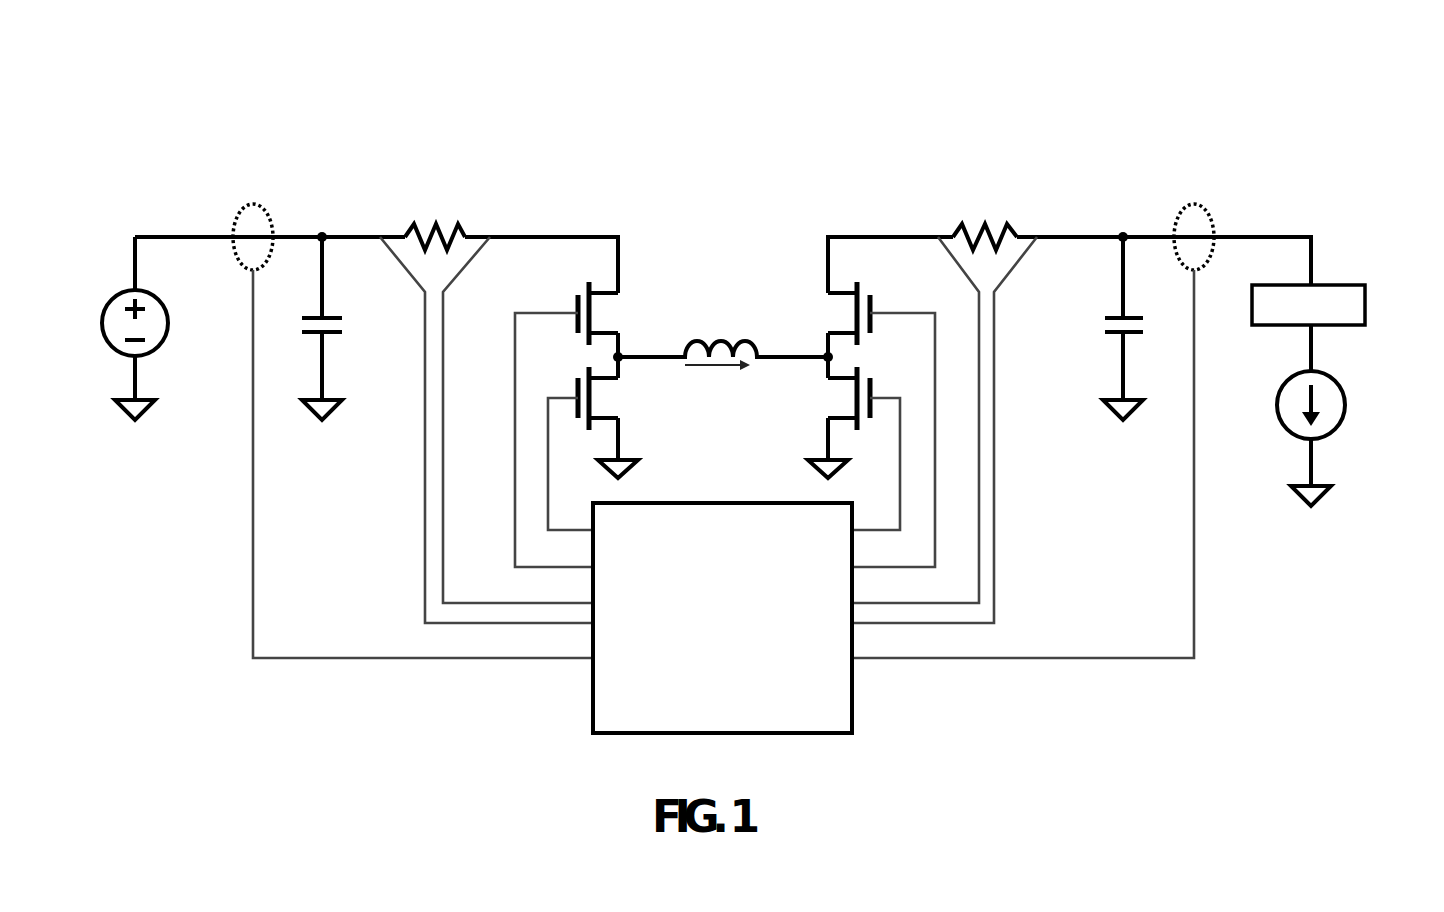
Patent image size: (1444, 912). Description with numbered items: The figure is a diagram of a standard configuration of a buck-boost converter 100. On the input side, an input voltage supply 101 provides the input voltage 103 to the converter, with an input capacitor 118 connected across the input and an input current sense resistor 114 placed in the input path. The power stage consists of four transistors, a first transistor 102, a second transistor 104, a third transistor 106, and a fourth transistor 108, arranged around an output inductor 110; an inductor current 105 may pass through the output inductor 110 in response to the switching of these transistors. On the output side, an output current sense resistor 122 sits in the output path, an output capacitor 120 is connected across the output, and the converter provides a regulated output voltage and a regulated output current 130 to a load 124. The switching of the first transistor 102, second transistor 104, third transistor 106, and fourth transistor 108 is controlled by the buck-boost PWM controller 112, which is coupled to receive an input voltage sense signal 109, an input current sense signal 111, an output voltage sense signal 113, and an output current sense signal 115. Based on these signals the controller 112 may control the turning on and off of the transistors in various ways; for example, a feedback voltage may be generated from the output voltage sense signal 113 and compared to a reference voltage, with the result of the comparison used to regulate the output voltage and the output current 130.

The buck-boost converter 100 is at (704, 49).
The input voltage supply 101 is at (236, 207).
The transistor Q1 102 is at (603, 424).
The input voltage Vin 103 is at (1215, 201).
The transistor Q2 104 is at (622, 448).
The inductor current IL 105 is at (718, 410).
The transistor Q3 106 is at (839, 424).
The transistor Q4 108 is at (821, 448).
The input voltage sense signal 109 is at (385, 464).
The inductor Lout 110 is at (723, 308).
The input current sense signal 111 is at (473, 430).
The buck-boost PWM controller 112 is at (722, 618).
The output voltage sense signal 113 is at (1058, 464).
The input current sense resistor R1 114 is at (442, 170).
The output current sense signal 115 is at (963, 430).
The input capacitor Cin 118 is at (348, 328).
The output capacitor Cout 120 is at (1087, 328).
The output current sense resistor R2 122 is at (985, 171).
The load 124 is at (1344, 304).
The output current Iload 130 is at (1352, 415).